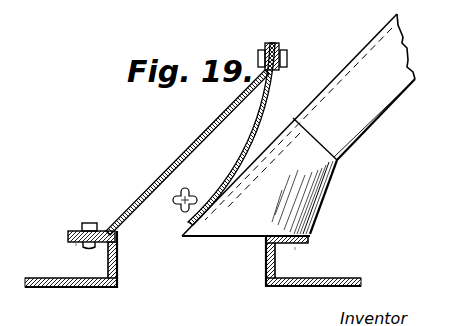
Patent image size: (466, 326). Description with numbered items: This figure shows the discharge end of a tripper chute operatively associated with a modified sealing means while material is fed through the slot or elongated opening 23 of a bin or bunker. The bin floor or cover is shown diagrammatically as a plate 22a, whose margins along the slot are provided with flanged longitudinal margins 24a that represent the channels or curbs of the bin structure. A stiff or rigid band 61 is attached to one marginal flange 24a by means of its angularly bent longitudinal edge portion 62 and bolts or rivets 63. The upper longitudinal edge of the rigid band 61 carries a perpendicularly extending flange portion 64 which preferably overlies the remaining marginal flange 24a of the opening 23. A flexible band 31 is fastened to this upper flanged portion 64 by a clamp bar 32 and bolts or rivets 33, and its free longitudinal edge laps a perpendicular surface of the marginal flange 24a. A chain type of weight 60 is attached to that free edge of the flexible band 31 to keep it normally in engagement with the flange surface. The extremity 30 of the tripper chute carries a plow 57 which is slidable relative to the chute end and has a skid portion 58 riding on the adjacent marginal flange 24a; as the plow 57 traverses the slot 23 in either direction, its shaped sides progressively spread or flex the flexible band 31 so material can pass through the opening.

The extremity of the tripper chute 30 is at (352, 61).
The flexible band 31 is at (242, 150).
The clamp bar 32 is at (280, 44).
The bolts or rivets 33 is at (288, 58).
The perpendicularly extending flange portion 64 is at (270, 44).
The stiff or rigid band 61 is at (191, 148).
The angularly bent longitudinal edge portion 62 is at (108, 231).
The bolts or rivets 63 is at (89, 223).
The chain type of weight 60 is at (180, 210).
The plow 57 is at (328, 192).
The skid portion 58 is at (308, 236).
The flanged longitudinal margins 24a is at (78, 245).
The plate 22a is at (58, 287).
The slot or elongated opening 23 is at (197, 268).